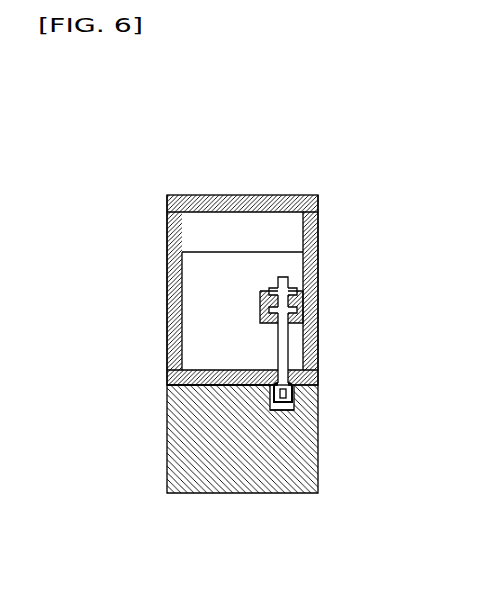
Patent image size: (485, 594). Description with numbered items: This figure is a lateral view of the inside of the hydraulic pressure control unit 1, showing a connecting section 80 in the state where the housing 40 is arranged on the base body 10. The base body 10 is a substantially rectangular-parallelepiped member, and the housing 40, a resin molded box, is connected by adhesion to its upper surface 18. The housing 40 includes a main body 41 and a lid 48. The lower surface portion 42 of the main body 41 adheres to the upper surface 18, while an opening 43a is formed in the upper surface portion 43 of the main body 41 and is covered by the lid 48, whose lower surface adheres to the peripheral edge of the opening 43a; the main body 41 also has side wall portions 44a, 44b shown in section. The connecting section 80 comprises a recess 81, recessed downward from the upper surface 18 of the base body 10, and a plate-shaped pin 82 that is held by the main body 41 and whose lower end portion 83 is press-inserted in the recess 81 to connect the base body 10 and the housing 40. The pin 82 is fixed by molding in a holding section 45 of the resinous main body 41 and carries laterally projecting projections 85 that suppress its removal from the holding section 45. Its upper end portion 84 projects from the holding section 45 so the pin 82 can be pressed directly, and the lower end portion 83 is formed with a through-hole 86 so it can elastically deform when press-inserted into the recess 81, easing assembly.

The hydraulic pressure control unit 1 is at (361, 137).
The base body 10 is at (178, 493).
The upper surface 18 is at (318, 355).
The housing 40 is at (170, 194).
The main body 41 is at (167, 280).
The lower surface portion 42 is at (167, 406).
The upper surface portion 43 is at (182, 251).
The opening 43a is at (167, 227).
The right wall 44a is at (318, 270).
The left wall 44b is at (167, 350).
The holding section 45 is at (260, 302).
The lid 48 is at (210, 195).
The connecting section 80 is at (220, 385).
The recess 81 is at (275, 410).
The pin 82 is at (269, 290).
The lower end portion 83 is at (294, 407).
The upper end portion 84 is at (284, 277).
The projection 85 is at (318, 318).
The through-hole 86 is at (293, 395).